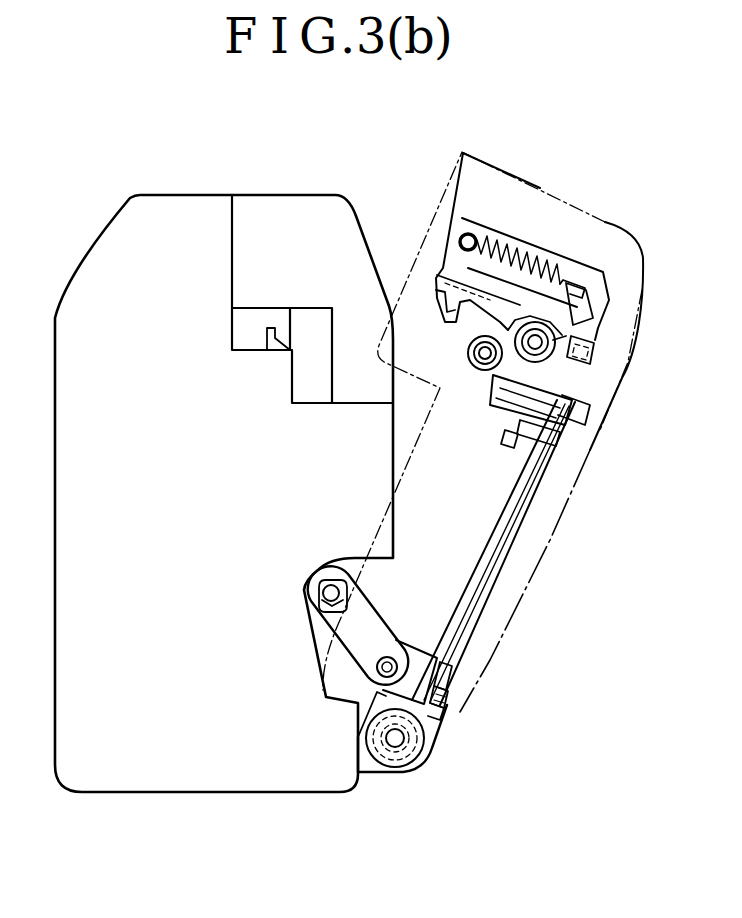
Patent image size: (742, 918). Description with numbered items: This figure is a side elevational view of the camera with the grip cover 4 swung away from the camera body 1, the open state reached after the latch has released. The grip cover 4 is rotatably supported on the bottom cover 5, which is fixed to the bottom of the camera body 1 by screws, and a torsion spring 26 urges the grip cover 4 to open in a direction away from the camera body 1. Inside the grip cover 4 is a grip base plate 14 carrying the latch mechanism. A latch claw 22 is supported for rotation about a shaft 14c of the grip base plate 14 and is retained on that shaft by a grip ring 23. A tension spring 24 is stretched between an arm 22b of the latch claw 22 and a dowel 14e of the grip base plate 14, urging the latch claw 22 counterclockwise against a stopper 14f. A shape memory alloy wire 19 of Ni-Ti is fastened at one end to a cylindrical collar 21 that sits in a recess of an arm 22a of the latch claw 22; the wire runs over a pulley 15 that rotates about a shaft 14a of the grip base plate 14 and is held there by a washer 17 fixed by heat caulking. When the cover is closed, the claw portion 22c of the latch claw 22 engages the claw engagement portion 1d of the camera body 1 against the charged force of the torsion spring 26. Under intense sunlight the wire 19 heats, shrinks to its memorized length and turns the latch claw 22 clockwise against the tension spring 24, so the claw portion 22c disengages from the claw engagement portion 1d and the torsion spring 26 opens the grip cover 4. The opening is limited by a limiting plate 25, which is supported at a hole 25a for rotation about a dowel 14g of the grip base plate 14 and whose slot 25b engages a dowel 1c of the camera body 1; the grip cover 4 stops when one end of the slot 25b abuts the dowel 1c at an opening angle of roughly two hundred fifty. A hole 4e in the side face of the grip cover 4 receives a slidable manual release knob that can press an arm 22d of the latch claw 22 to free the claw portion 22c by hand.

The camera body 1 is at (178, 213).
The dowel 1c is at (320, 596).
The claw engagement portion 1d is at (278, 328).
The grip cover 4 is at (642, 242).
The hole 4e is at (512, 442).
The bottom cover 5 is at (370, 772).
The grip base plate 14 is at (598, 298).
The shaft 14a is at (450, 695).
The shaft 14c is at (575, 412).
The dowel 14e is at (462, 238).
The stopper 14f is at (596, 265).
The dowel 14g is at (365, 702).
The pulley 15 is at (447, 668).
The washer 17 is at (448, 700).
The shape memory alloy wire 19 is at (465, 620).
The cylindrical collar 21 is at (598, 350).
The latch claw 22 is at (458, 335).
The arm 22a is at (590, 385).
The arm 22b is at (588, 278).
The claw portion 22c is at (443, 298).
The arm 22d is at (540, 432).
The grip ring 23 is at (492, 405).
The tension spring 24 is at (547, 262).
The limiting plate 25 is at (355, 633).
The hole 25a is at (412, 648).
The slot 25b is at (342, 582).
The torsion spring 26 is at (405, 770).